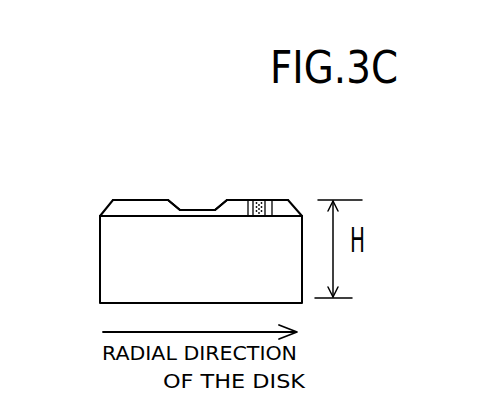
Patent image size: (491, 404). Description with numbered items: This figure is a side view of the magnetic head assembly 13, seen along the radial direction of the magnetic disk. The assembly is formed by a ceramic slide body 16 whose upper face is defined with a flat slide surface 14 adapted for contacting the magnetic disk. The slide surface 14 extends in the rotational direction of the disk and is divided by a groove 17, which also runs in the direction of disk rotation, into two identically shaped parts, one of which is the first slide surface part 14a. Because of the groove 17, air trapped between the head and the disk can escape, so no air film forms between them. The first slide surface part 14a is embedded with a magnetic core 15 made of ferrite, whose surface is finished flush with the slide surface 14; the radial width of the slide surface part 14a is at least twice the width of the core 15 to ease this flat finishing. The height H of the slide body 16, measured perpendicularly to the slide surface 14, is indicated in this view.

The magnetic head assembly 13 is at (275, 126).
The flat slide surface 14 is at (125, 200).
The first slide surface part 14a is at (148, 200).
The magnetic core 15 is at (263, 197).
The ceramic slide body 16 is at (100, 215).
The groove 17 is at (200, 210).